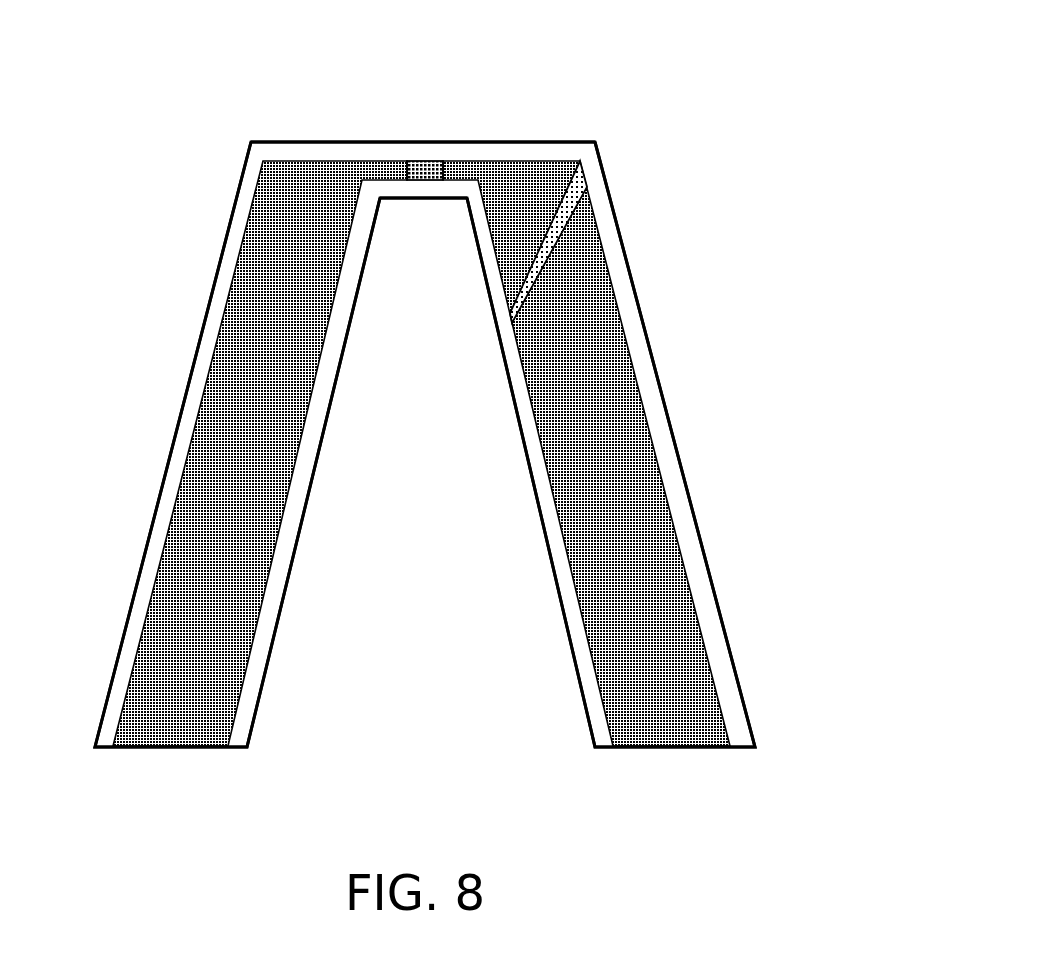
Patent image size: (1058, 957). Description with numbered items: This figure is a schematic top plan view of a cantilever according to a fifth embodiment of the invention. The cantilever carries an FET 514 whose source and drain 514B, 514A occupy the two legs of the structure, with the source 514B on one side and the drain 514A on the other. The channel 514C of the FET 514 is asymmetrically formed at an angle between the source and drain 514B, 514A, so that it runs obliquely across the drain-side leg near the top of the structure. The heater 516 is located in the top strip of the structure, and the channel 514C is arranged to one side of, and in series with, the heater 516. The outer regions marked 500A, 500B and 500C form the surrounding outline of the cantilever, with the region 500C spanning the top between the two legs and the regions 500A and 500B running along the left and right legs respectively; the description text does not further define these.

The FET 514 is at (627, 118).
The end bridge 500C is at (332, 142).
The bridge 500A is at (257, 708).
The bridge 500B is at (670, 423).
The source 514B is at (240, 585).
The drain 514A is at (647, 577).
The channel 514C is at (548, 240).
The heater 516 is at (425, 160).